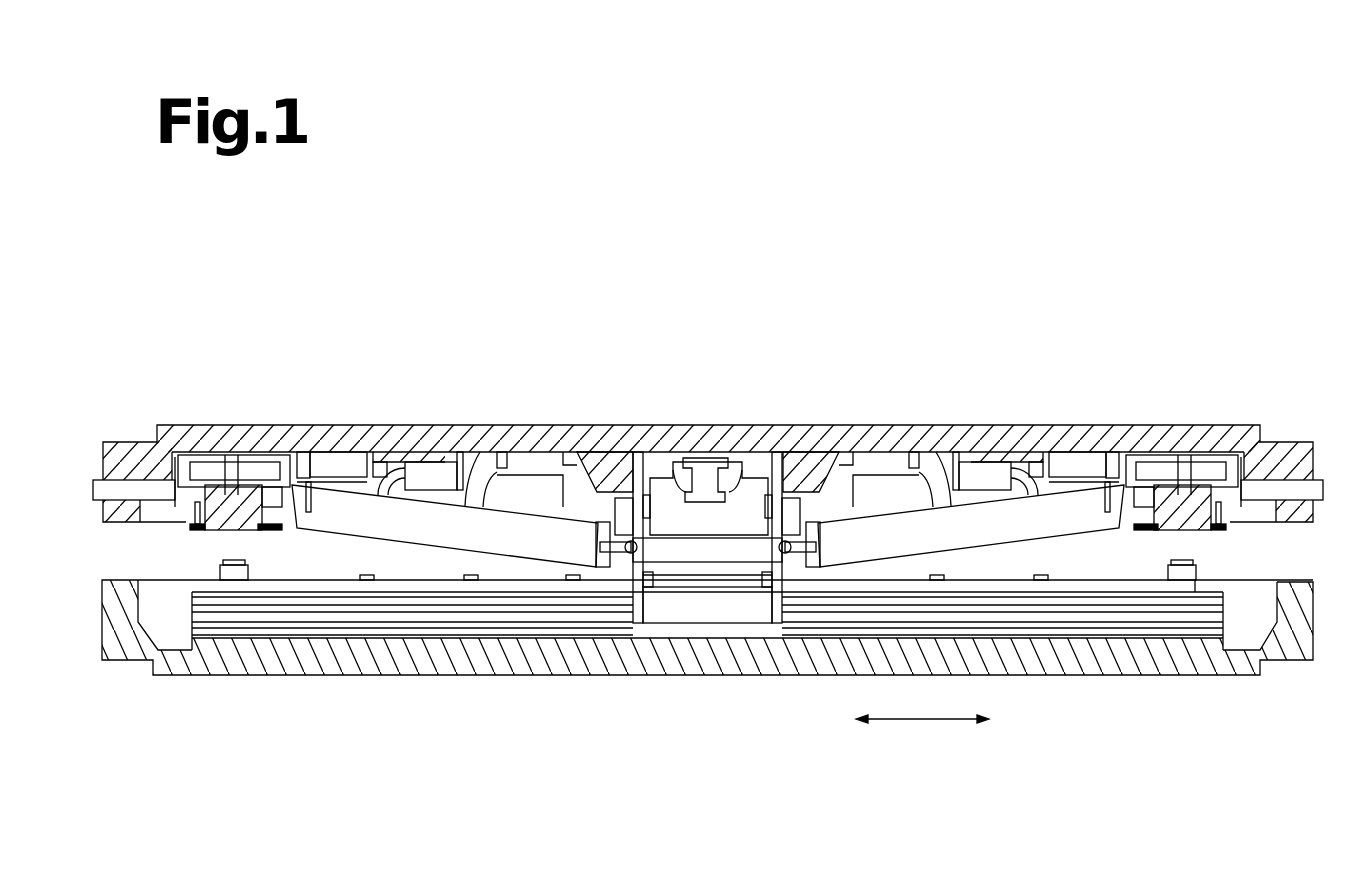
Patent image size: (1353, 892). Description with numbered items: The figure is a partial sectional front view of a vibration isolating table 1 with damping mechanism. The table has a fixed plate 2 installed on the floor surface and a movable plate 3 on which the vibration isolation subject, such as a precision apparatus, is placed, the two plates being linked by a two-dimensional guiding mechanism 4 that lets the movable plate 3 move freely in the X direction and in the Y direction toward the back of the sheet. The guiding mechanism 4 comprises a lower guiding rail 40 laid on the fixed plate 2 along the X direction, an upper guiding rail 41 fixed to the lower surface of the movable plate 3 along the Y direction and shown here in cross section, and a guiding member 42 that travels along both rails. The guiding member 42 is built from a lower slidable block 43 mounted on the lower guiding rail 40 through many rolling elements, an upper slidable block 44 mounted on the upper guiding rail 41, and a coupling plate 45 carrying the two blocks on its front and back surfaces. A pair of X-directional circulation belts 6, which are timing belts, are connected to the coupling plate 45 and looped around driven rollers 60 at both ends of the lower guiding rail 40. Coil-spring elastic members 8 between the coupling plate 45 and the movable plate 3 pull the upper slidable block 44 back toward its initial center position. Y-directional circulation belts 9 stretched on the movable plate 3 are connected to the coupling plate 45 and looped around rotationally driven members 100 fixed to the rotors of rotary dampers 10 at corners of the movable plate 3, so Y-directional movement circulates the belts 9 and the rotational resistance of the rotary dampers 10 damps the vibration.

The vibration isolating table with damping mechanism 1 is at (187, 696).
The fixed plate 2 is at (402, 676).
The movable plate 3 is at (397, 437).
The two-dimensional guiding mechanism 4 is at (607, 458).
The X-directional circulation belt 6 is at (1102, 583).
The elastic member 8 is at (455, 522).
The Y-directional circulation belt 9 is at (855, 510).
The rotary damper 10 is at (262, 470).
The lower guiding rail 40 is at (557, 610).
The upper guiding rail 41 is at (702, 475).
The guiding member 42 is at (760, 635).
The lower slidable block 43 is at (717, 617).
The upper slidable block 44 is at (740, 495).
The coupling plate 45 is at (683, 548).
The driven roller 60 is at (220, 567).
The rotationally driven member 100 is at (216, 466).